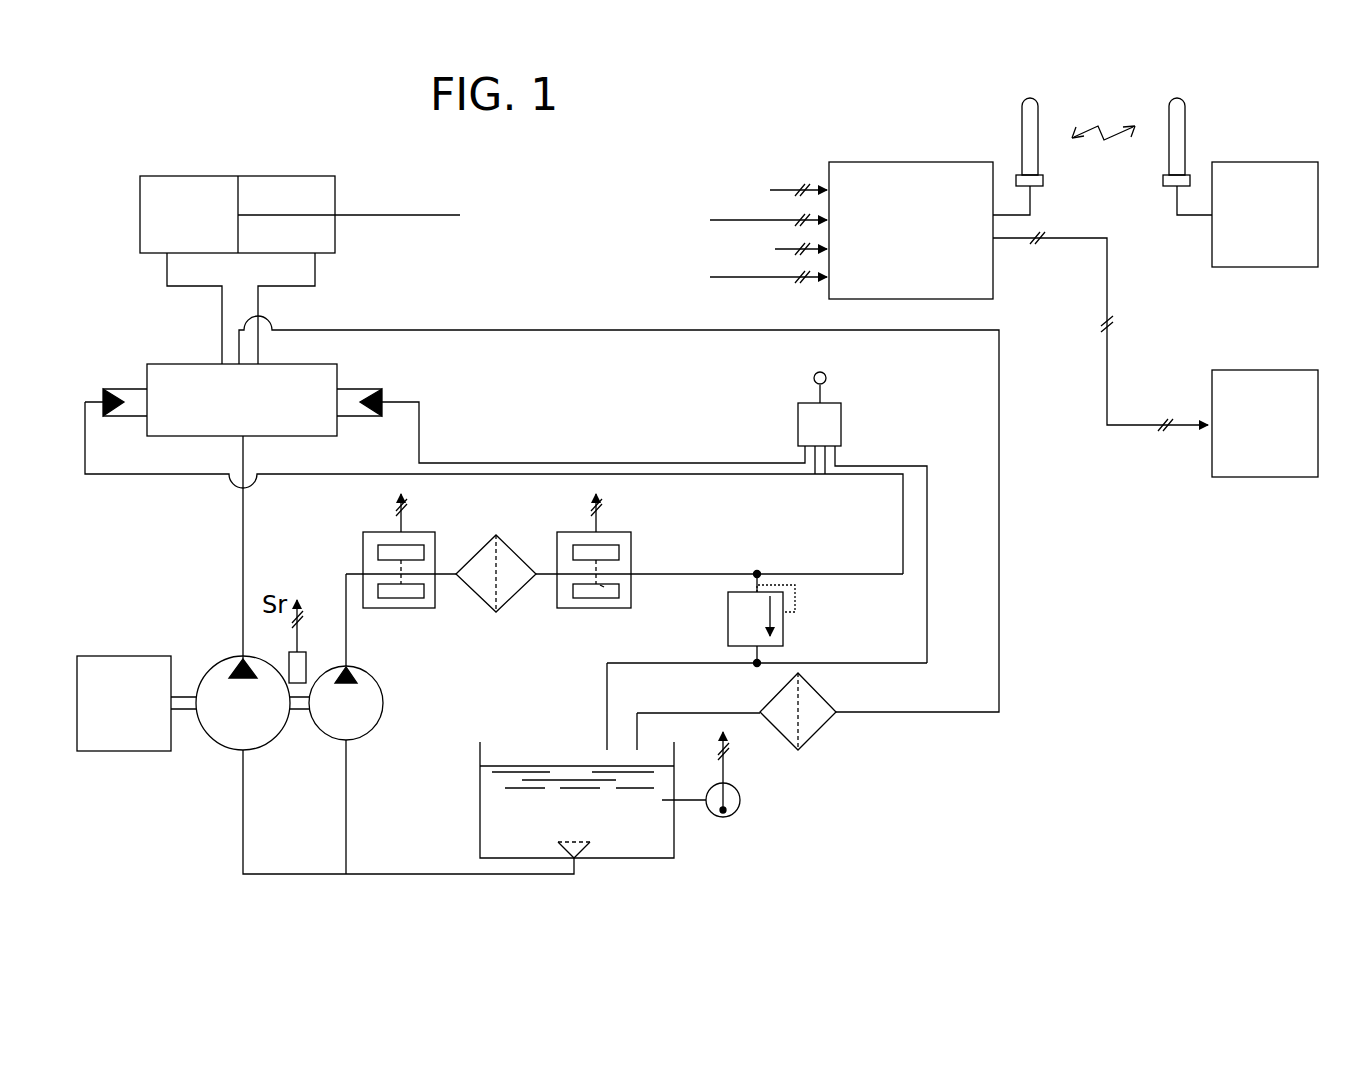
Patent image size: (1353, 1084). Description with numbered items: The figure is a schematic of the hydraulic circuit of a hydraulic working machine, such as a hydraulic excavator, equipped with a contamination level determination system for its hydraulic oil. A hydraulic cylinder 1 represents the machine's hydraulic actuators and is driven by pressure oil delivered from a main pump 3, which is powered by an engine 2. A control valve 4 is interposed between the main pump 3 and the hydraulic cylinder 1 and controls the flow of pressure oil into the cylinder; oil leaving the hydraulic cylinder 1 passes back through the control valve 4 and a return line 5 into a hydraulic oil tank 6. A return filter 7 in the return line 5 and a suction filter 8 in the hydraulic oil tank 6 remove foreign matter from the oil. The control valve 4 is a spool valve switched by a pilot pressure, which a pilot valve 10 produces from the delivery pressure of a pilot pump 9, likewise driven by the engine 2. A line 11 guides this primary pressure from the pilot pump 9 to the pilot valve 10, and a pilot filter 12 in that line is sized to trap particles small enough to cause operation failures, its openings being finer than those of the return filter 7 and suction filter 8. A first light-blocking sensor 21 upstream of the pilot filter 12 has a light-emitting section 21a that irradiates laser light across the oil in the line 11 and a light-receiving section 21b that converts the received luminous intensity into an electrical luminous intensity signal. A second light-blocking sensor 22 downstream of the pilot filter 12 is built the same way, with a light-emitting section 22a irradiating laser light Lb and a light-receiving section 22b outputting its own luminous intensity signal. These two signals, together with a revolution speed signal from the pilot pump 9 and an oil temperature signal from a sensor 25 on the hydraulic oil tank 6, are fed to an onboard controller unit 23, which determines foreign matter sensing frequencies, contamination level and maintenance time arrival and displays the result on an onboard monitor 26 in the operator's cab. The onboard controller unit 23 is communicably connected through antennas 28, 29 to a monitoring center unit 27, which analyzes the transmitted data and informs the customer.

The hydraulic cylinder 1 is at (210, 176).
The engine 2 is at (130, 656).
The main pump 3 is at (215, 665).
The control valve 4 is at (190, 364).
The return line 5 is at (1000, 568).
The hydraulic oil tank 6 is at (674, 830).
The return filter 7 is at (830, 735).
The suction filter 8 is at (590, 860).
The pilot pump 9 is at (318, 750).
The pilot valve 10 is at (841, 412).
The line 11 is at (340, 585).
The pilot filter 12 is at (500, 538).
The first light-blocking sensor 21 is at (408, 574).
The light-emitting section 21a is at (412, 598).
The light-receiving section 21b is at (412, 545).
The second light-blocking sensor 22 is at (719, 576).
The light-emitting section 22a is at (592, 598).
The light-receiving section 22b is at (620, 548).
The laser light Lb is at (602, 586).
The onboard controller unit 23 is at (870, 162).
The temperature sensor 25 is at (740, 815).
The onboard monitor 26 is at (1245, 370).
The monitoring center unit 27 is at (1245, 162).
The antenna 28 is at (1038, 125).
The antenna 29 is at (1185, 125).